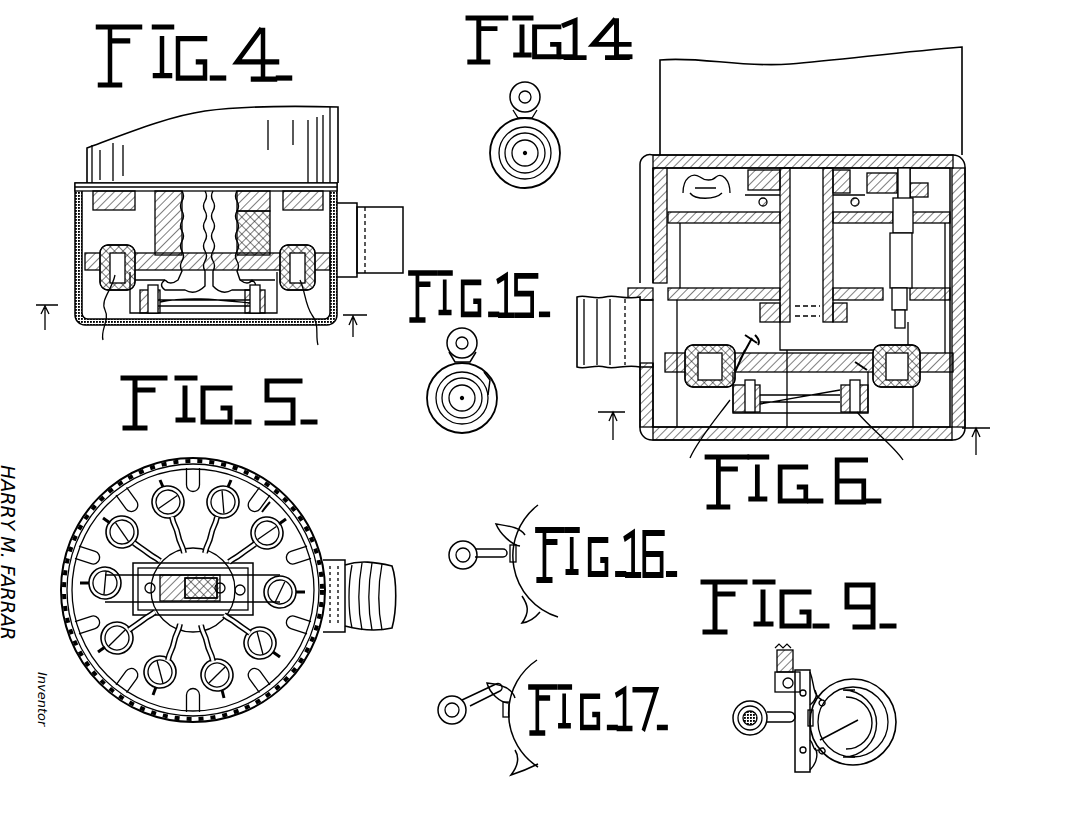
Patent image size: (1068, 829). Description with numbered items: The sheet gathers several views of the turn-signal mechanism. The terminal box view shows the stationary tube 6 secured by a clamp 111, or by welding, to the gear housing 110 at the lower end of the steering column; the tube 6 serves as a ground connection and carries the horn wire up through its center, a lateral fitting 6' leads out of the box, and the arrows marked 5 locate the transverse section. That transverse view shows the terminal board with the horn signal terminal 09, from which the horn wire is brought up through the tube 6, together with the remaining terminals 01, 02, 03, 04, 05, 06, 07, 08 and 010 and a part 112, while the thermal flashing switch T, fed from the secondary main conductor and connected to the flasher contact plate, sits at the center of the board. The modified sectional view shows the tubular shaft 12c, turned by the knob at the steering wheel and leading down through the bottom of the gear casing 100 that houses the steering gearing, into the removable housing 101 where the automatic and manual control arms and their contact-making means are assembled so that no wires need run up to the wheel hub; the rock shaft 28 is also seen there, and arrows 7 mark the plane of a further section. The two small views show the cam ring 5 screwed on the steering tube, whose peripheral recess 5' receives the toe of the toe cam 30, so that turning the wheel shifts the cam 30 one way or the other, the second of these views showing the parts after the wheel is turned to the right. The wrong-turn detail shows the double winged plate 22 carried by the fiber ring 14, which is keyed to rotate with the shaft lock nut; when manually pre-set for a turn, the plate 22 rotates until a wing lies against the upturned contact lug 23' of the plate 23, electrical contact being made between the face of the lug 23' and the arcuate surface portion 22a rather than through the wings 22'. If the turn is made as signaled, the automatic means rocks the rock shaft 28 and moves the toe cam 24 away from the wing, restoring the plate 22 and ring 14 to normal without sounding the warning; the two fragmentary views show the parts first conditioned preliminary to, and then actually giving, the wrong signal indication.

In FIG. 4, the gear housing 110 is at (340, 135).
In FIG. 4, the stationary tube 6 is at (206, 237).
In FIG. 5, the stationary tube 6 is at (193, 582).
In FIG. 4, the conduit outlet / stub 6' is at (380, 225).
In FIG. 5, the conduit outlet / stub 6' is at (369, 583).
In FIG. 4, the clamp 111 is at (157, 228).
In FIG. 4, the terminal screw 06 is at (106, 317).
In FIG. 5, the terminal screw 06 is at (98, 580).
In FIG. 4, the thermal flashing switch T is at (205, 300).
In FIG. 5, the thermal flashing switch T is at (200, 590).
In FIG. 4, the terminal screw 01 is at (313, 320).
In FIG. 6, the terminal screw 01 is at (891, 447).
In FIG. 5, the terminal screw 01 is at (310, 573).
In FIG. 4, the cam ring 5 is at (201, 332).
In FIG. 14, the cam ring 5 is at (537, 153).
In FIG. 15, the cam ring 5 is at (472, 398).
In FIG. 5, the terminal screw 04 is at (172, 486).
In FIG. 5, the terminal screw 03 is at (228, 500).
In FIG. 5, the casing tab 112 is at (268, 513).
In FIG. 5, the terminal screw 02 is at (276, 530).
In FIG. 6, the terminal screw 05 is at (701, 441).
In FIG. 5, the terminal screw 05 is at (118, 522).
In FIG. 5, the terminal screw 07 is at (113, 648).
In FIG. 5, the terminal screw 08 is at (157, 682).
In FIG. 5, the horn signal terminal 09 is at (221, 684).
In FIG. 5, the terminal screw 010 is at (268, 648).
In FIG. 14, the toe cam 30 is at (541, 95).
In FIG. 15, the toe cam 30 is at (478, 342).
In FIG. 6, the toe cam 30 is at (945, 192).
In FIG. 14, the recess 5' is at (509, 107).
In FIG. 15, the recess 5' is at (492, 373).
In FIG. 6, the gear casing 100 is at (950, 108).
In FIG. 6, the rock shaft 28 is at (910, 240).
In FIG. 16, the rock shaft 28 is at (460, 561).
In FIG. 17, the rock shaft 28 is at (449, 720).
In FIG. 9, the rock shaft 28 is at (746, 722).
In FIG. 6, the tubular shaft 12c is at (838, 250).
In FIG. 6, the removable housing 101 is at (962, 268).
In FIG. 6, the section 7- 7 is at (794, 444).
In FIG. 16, the wing 22' is at (507, 521).
In FIG. 17, the wing 22' is at (505, 676).
In FIG. 9, the wing 22' is at (837, 676).
In FIG. 16, the toe cam 24 is at (487, 560).
In FIG. 17, the toe cam 24 is at (478, 690).
In FIG. 9, the toe cam 24 is at (773, 728).
In FIG. 16, the upturned contact lug 23' is at (503, 570).
In FIG. 17, the upturned contact lug 23' is at (494, 723).
In FIG. 9, the upturned contact lug 23' is at (786, 738).
In FIG. 16, the double winged plate 22 is at (535, 561).
In FIG. 17, the double winged plate 22 is at (523, 713).
In FIG. 9, the double winged plate 22 is at (875, 719).
In FIG. 9, the arcuate surface portion 22a is at (860, 720).
In FIG. 9, the fiber ring 14 is at (868, 694).
In FIG. 9, the plate 23 is at (786, 719).